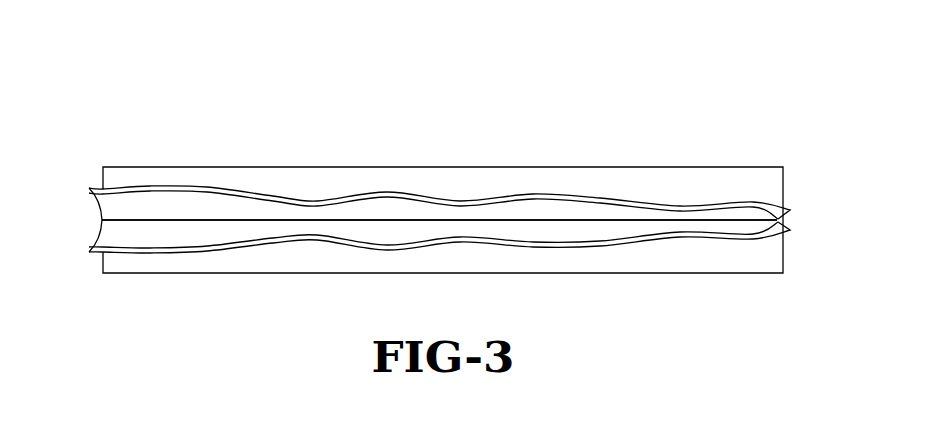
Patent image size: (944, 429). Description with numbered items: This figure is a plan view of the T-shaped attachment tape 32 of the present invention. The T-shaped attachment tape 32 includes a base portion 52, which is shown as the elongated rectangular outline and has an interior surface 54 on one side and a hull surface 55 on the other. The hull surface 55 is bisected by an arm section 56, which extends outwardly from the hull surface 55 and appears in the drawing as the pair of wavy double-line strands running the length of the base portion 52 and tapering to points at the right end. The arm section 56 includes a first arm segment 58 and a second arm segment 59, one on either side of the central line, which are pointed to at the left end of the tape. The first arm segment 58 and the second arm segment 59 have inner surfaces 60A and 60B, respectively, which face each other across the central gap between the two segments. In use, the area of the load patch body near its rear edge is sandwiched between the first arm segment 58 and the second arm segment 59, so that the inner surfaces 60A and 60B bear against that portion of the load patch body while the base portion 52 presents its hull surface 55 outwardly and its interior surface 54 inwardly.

The T-shaped attachment tape 32 is at (547, 117).
The base portion 52 is at (325, 167).
The interior surface 54 is at (690, 250).
The hull surface 55 is at (410, 184).
The arm section 56 is at (615, 248).
The first arm segment 58 is at (89, 188).
The second arm segment 59 is at (89, 252).
The inner surface 60A is at (173, 208).
The inner surface 60B is at (173, 234).